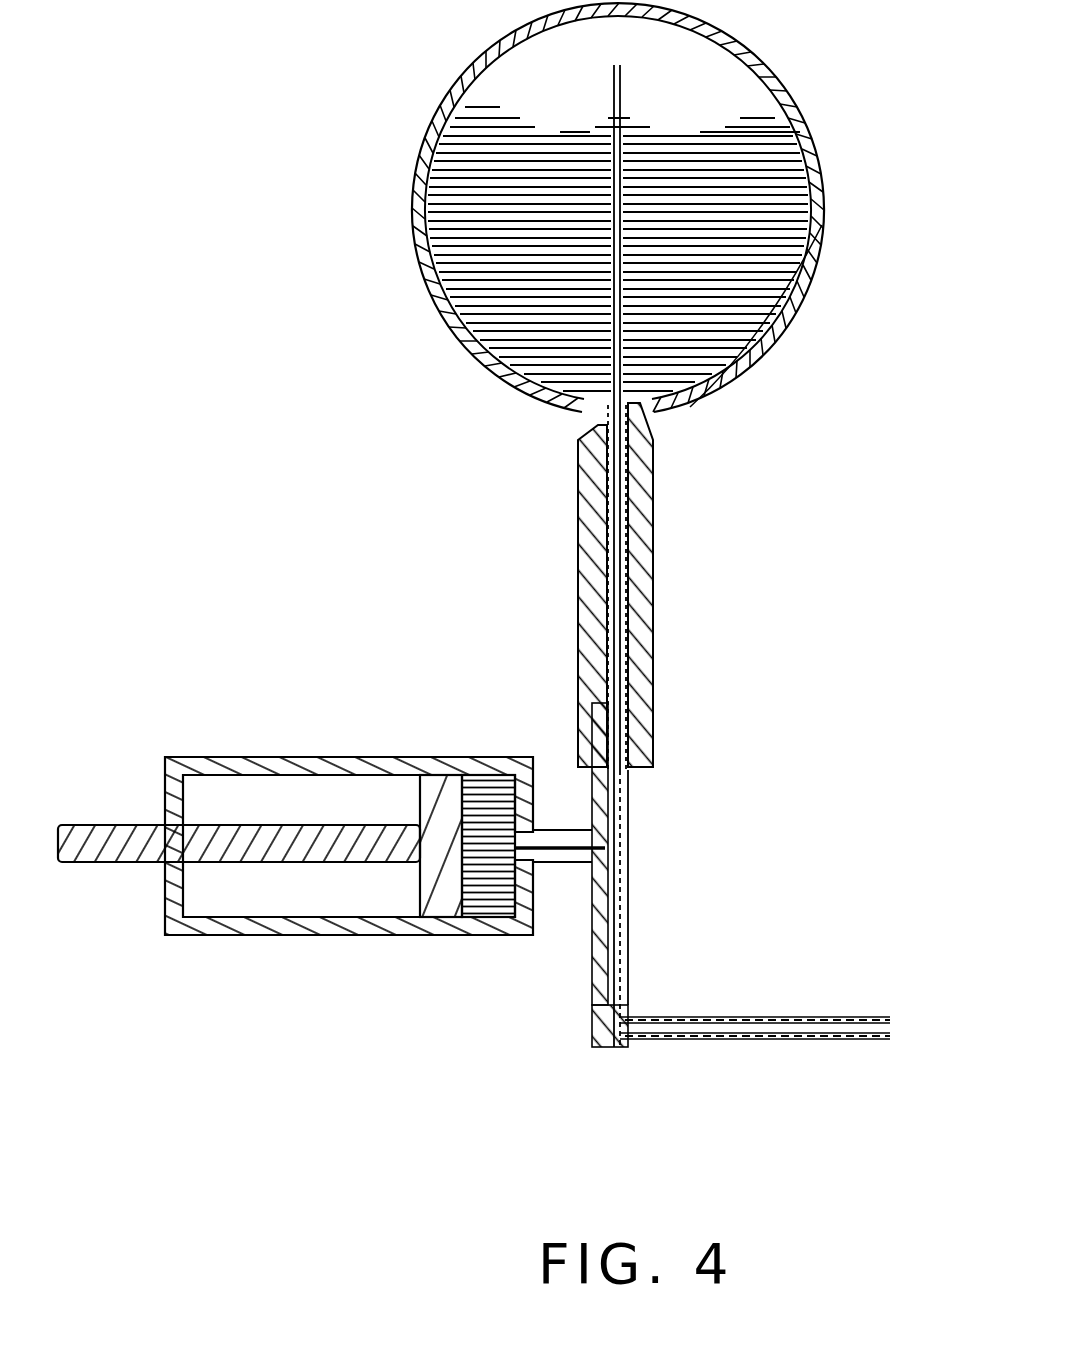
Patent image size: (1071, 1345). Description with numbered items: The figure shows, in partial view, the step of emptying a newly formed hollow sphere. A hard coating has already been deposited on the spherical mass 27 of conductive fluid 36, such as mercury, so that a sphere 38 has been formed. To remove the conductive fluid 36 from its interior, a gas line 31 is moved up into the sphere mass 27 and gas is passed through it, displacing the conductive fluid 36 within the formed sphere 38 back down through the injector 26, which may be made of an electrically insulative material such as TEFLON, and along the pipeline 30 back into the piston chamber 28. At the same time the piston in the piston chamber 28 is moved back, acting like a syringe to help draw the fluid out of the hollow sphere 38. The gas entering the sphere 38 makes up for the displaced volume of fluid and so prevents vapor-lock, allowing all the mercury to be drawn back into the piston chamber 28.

The sphere 38 is at (748, 56).
The mass 27 is at (760, 212).
The conductive fluid 36 is at (497, 287).
The pipeline 30 is at (595, 425).
The gas line 31 is at (660, 373).
The injector 26 is at (637, 567).
The piston chamber 28 is at (490, 772).